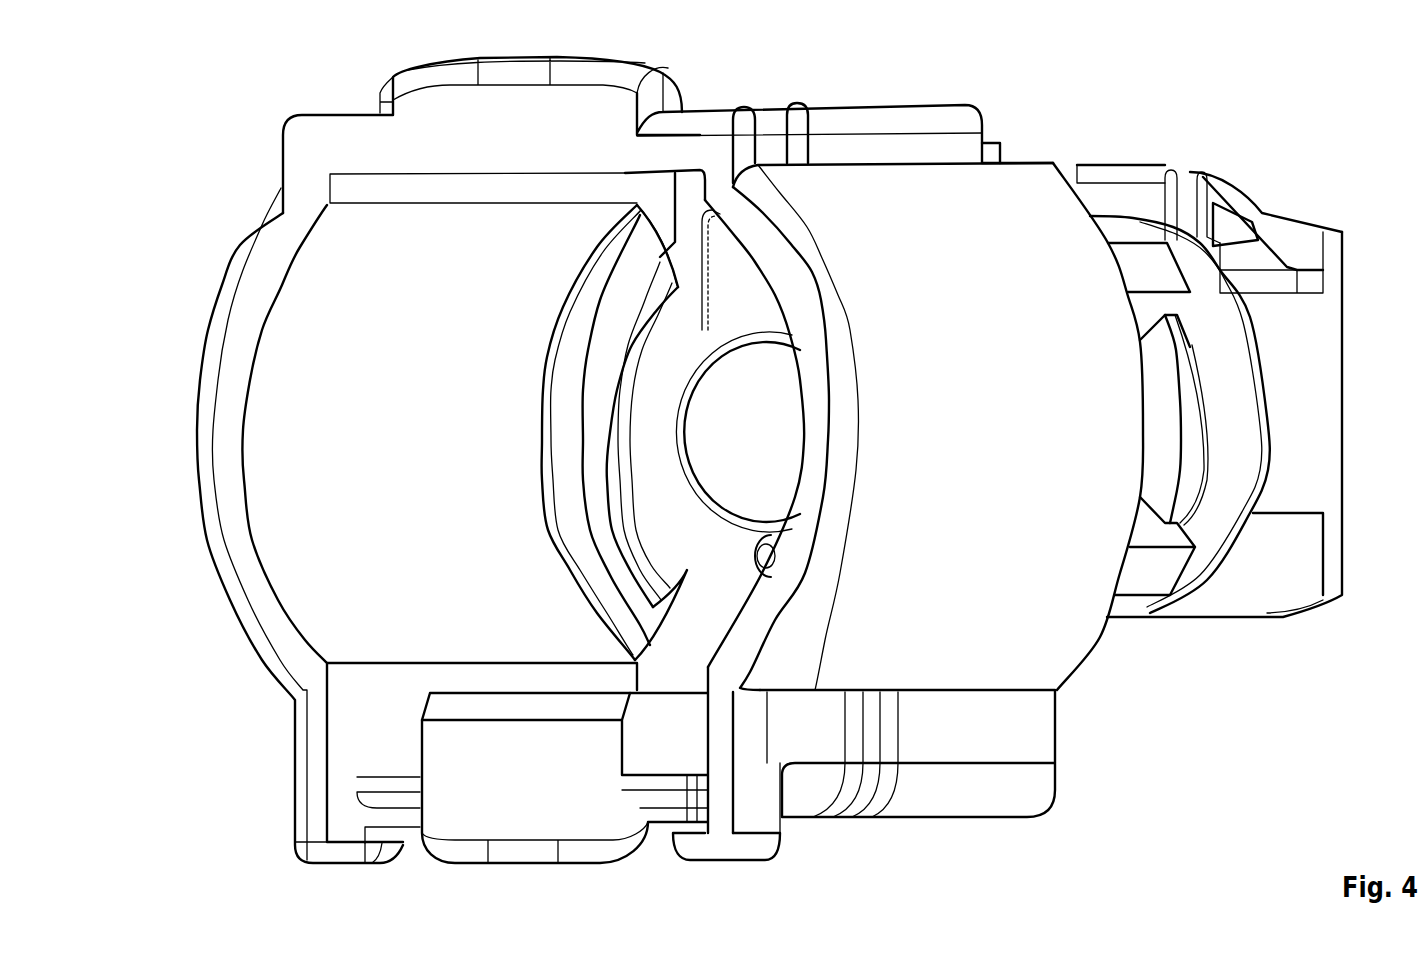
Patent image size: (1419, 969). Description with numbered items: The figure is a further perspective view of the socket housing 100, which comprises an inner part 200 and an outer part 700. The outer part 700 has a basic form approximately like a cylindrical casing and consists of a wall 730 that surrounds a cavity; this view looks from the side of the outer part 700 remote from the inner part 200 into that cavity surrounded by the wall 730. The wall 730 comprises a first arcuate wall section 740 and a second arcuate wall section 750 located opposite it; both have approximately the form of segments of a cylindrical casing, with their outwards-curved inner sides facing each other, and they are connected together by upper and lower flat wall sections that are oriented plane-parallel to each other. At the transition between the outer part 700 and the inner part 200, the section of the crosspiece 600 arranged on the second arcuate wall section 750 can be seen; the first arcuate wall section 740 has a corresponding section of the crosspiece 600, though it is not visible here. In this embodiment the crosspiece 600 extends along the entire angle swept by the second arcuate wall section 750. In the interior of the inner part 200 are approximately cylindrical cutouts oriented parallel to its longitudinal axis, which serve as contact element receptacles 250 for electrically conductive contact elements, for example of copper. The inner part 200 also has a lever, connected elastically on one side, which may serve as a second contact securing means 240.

The socket housing 100 is at (228, 62).
The inner part 200 is at (1183, 652).
The second contact securing means 240 is at (1232, 194).
The contact element receptacles 250 is at (750, 428).
The crosspiece 600 is at (566, 367).
The outer part 700 is at (1060, 655).
The wall 730 is at (579, 482).
The first arcuate wall section 740 is at (812, 670).
The second arcuate wall section 750 is at (327, 263).